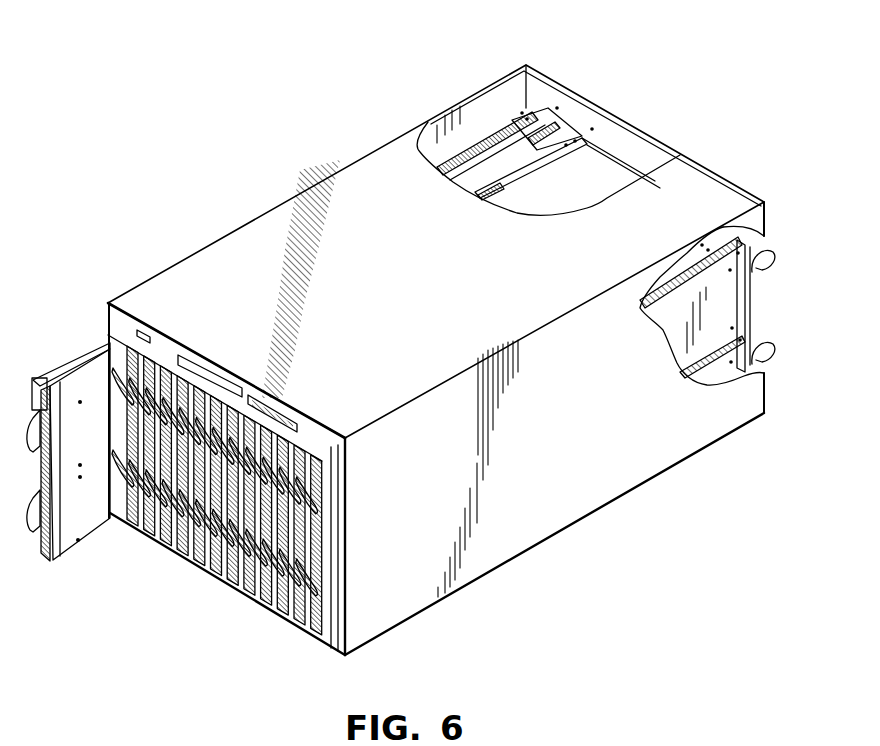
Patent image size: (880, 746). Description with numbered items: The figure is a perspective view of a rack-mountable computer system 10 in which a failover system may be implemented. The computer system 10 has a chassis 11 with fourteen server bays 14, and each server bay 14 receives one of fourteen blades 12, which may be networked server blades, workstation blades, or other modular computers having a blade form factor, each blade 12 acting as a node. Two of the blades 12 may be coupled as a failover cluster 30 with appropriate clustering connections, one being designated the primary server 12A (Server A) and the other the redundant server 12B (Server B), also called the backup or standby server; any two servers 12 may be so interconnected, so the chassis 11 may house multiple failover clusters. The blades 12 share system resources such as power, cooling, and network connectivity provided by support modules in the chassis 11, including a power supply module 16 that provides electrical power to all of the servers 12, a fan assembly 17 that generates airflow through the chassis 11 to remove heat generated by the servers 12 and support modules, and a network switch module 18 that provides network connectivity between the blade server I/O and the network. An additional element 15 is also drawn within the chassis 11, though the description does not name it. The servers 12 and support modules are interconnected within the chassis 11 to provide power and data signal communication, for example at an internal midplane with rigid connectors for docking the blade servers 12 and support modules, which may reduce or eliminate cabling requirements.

The computer system 10 is at (250, 166).
The chassis 11 is at (375, 151).
The blade 12 is at (50, 562).
The primary server 12A is at (302, 418).
The redundant server 12B is at (308, 420).
The server bay 14 is at (113, 546).
The guide rail 15 is at (480, 140).
The power supply module 16 is at (560, 127).
The fan assembly 17 is at (575, 199).
The network switch module 18 is at (723, 302).
The failover cluster 30 is at (267, 614).